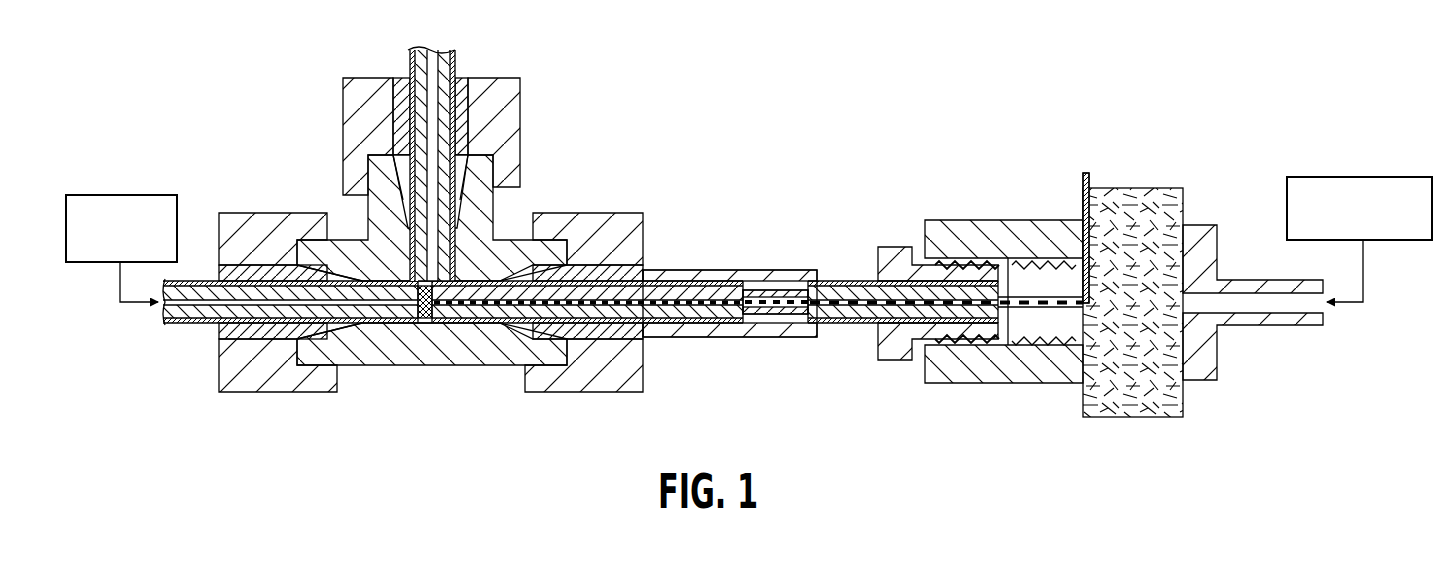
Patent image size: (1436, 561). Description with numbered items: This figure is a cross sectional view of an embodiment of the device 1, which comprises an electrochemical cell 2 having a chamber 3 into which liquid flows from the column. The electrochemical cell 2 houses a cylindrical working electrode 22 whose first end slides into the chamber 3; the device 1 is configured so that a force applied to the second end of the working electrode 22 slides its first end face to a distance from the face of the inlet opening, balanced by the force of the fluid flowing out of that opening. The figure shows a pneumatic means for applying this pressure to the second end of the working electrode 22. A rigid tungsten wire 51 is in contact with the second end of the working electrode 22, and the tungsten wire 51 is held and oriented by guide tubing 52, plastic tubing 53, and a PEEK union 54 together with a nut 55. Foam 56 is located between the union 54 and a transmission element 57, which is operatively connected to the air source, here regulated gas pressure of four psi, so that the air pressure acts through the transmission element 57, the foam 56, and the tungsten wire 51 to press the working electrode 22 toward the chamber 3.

The device 1 is at (255, 76).
The electrochemical cell 2 is at (380, 240).
The chamber 3 is at (436, 282).
The working electrode 22 is at (609, 296).
The tungsten wire 51 is at (767, 296).
The guide tubing 52 is at (687, 266).
The plastic tubing 53 is at (840, 266).
The PEEK union 54 is at (1027, 237).
The nut 55 is at (899, 256).
The foam 56 is at (1122, 213).
The transmission element 57 is at (1204, 232).